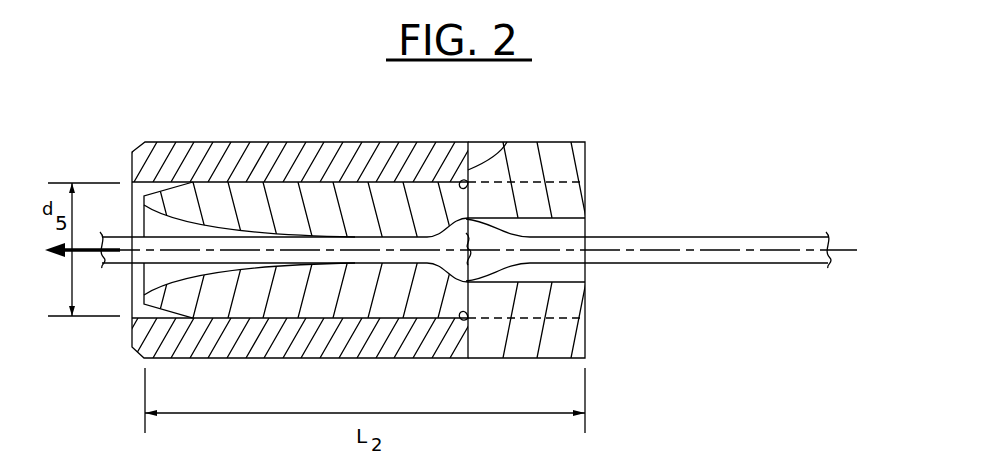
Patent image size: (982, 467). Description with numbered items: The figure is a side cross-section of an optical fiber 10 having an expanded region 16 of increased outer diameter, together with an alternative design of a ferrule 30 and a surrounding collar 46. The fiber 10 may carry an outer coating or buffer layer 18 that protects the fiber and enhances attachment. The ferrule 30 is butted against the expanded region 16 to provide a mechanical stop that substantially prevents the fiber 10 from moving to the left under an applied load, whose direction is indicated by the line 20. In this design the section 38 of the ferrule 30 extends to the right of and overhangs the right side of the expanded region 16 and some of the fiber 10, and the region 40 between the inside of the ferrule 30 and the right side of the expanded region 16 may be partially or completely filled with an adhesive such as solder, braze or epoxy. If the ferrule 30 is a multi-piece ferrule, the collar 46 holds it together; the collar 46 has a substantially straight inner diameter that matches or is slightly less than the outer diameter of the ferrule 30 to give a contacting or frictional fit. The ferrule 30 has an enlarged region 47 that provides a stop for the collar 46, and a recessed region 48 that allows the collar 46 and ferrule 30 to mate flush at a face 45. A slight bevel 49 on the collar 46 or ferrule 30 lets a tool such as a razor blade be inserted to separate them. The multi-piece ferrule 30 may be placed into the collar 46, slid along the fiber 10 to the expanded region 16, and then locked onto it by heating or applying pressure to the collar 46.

The optical waveguide 10 is at (742, 229).
The expanded region 16 is at (478, 250).
The buffer layer 18 is at (677, 237).
The line 20 is at (65, 256).
The ferrule 30 is at (298, 250).
The section 38 is at (586, 183).
The region 40 is at (586, 218).
The face 45 is at (512, 192).
The collar 46 is at (157, 150).
The enlarged region 47 is at (583, 144).
The recessed region 48 is at (520, 190).
The bevel 49 is at (463, 180).